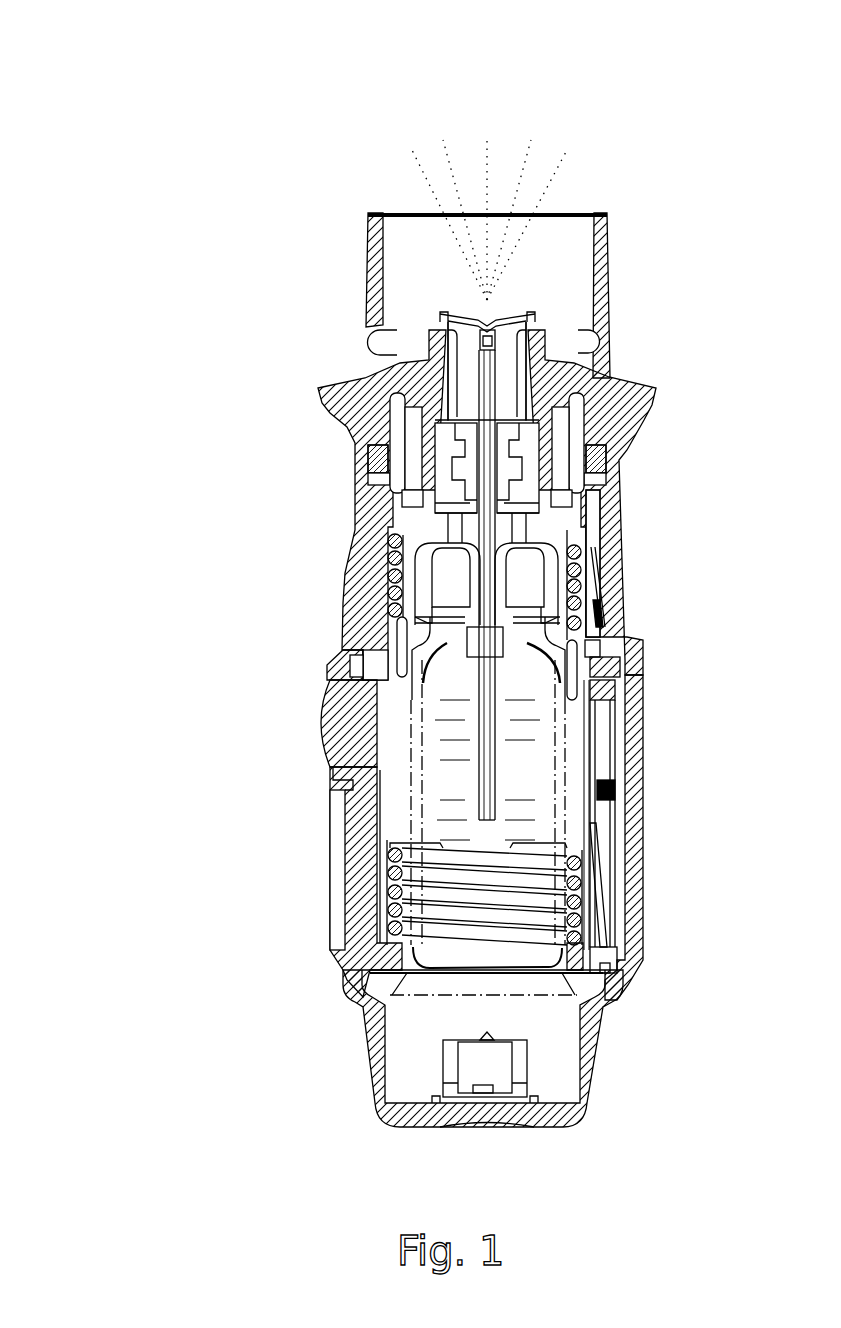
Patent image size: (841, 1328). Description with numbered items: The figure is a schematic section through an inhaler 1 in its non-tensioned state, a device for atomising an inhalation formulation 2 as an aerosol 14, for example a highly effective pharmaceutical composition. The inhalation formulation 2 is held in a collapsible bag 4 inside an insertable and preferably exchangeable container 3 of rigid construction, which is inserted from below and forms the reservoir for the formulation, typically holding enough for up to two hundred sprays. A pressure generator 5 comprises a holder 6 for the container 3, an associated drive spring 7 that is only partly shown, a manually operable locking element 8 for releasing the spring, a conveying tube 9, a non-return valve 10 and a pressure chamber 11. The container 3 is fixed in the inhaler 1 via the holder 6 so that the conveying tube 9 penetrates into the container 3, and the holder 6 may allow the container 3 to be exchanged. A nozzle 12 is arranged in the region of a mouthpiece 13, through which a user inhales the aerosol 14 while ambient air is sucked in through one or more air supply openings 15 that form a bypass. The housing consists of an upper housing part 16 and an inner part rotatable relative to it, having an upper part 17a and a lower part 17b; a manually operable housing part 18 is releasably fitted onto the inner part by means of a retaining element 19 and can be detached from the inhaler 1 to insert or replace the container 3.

The inhaler 1 is at (684, 90).
The inhalation formulation 2 is at (510, 780).
The container 3 is at (608, 815).
The collapsible bag 4 is at (587, 855).
The pressure generator 5 is at (505, 378).
The holder 6 is at (585, 522).
The drive spring 7 is at (593, 575).
The locking element 8 is at (620, 440).
The conveying tube 9 is at (500, 412).
The non-return valve 10 is at (540, 345).
The pressure chamber 11 is at (545, 322).
The nozzle 12 is at (490, 303).
The mouthpiece 13 is at (370, 273).
The aerosol 14 is at (420, 181).
The air supply opening 15 is at (380, 340).
The upper housing part 16 is at (370, 497).
The upper part of inner part 17a is at (395, 607).
The lower part of inner part 17b is at (380, 703).
The housing part 18 is at (337, 877).
The retaining element 19 is at (345, 735).